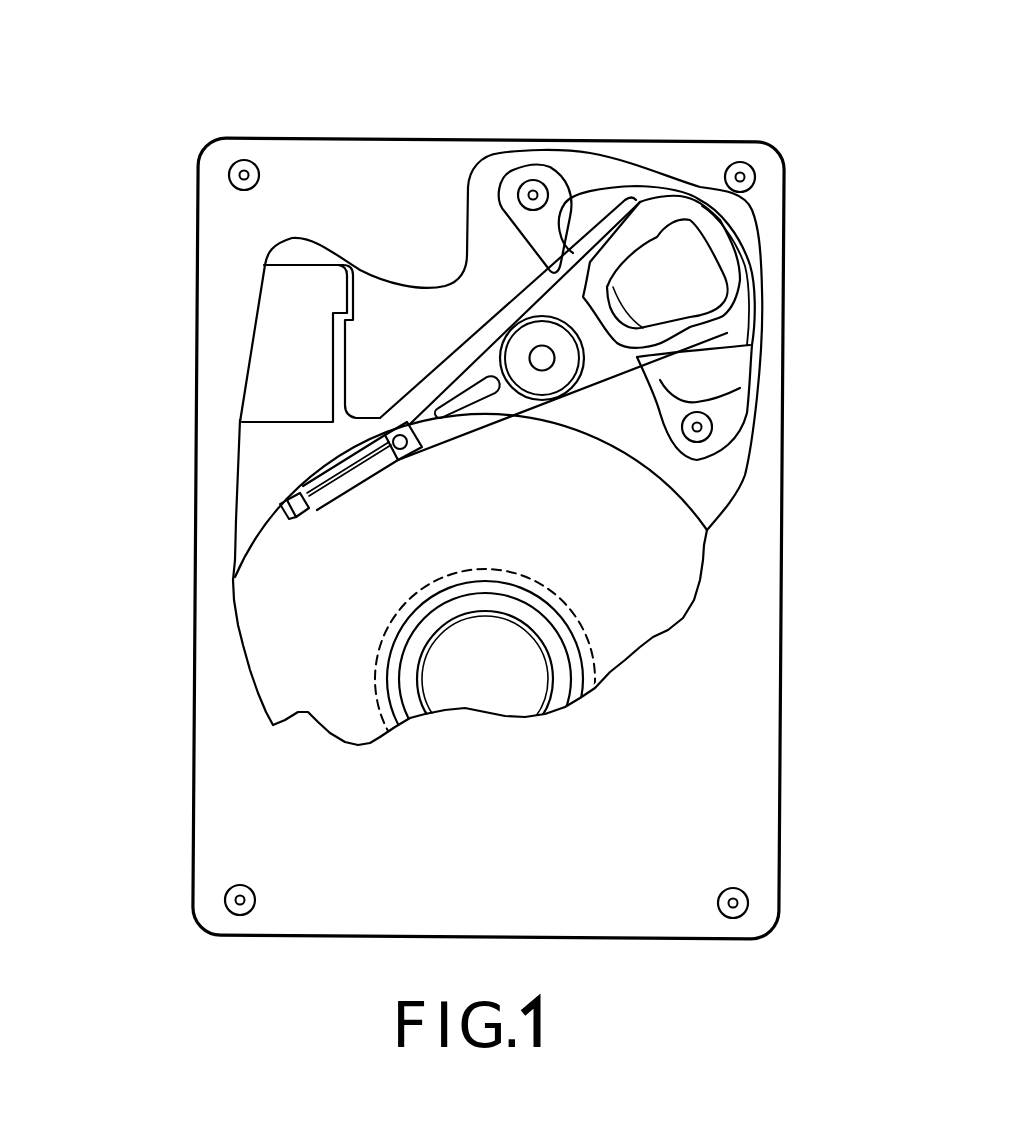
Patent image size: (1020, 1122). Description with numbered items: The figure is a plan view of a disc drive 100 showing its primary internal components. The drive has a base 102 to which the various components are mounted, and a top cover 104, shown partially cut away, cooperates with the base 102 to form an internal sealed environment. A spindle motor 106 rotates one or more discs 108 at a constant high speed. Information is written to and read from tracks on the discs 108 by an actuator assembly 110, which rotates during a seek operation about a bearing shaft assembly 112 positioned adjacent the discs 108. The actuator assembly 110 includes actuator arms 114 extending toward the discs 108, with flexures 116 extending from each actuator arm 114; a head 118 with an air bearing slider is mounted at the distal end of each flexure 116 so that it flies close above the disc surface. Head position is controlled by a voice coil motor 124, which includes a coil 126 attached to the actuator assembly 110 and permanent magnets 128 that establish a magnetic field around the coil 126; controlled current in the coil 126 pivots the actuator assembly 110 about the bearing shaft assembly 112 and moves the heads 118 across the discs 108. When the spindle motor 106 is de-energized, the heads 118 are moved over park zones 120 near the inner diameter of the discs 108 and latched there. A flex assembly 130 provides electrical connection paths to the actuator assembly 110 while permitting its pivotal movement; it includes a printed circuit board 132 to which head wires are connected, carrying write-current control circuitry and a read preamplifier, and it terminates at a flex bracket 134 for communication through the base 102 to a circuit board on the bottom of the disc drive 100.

The disc drive 100 is at (233, 83).
The base 102 is at (270, 483).
The top cover 104 is at (245, 780).
The spindle motor 106 is at (483, 688).
The disc 108 is at (653, 597).
The actuator assembly 110 is at (527, 405).
The bearing shaft assembly 112 is at (546, 362).
The actuator arm 114 is at (487, 423).
The flexure 116 is at (347, 480).
The head 118 is at (287, 522).
The park zone 120 is at (370, 672).
The voice coil motor 124 is at (571, 144).
The coil 126 is at (728, 271).
The permanent magnet 128 is at (577, 223).
The flex assembly 130 is at (457, 355).
The printed circuit board 132 is at (492, 305).
The flex bracket 134 is at (284, 357).